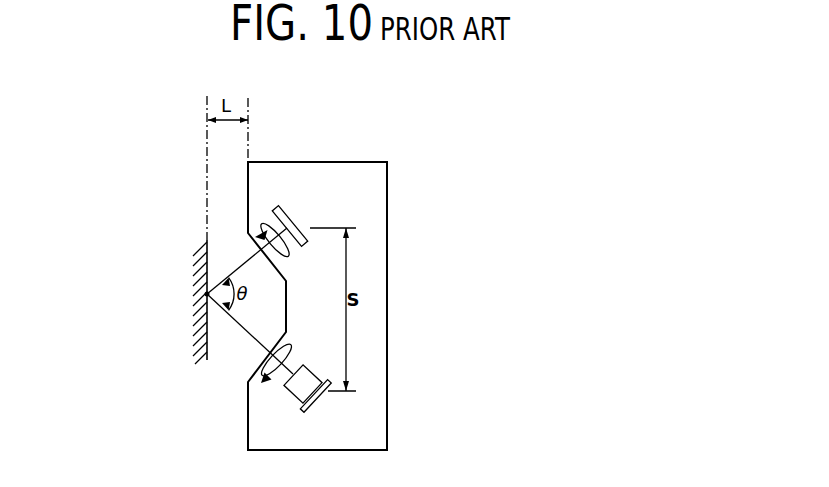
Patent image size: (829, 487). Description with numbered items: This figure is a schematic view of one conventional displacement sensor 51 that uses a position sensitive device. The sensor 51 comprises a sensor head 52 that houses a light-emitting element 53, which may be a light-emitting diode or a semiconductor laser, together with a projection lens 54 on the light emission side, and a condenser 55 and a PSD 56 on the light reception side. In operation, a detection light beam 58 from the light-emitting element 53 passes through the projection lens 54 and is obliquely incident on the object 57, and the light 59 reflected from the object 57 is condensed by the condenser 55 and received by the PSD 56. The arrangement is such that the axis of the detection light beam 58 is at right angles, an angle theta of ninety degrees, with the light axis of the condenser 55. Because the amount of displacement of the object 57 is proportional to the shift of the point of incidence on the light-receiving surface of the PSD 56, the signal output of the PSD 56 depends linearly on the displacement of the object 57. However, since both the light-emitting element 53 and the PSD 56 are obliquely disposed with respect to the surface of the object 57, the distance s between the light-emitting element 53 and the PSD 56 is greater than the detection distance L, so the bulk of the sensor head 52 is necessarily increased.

The displacement sensor 51 is at (395, 199).
The sensor head 52 is at (343, 170).
The light-emitting element 53 is at (287, 398).
The projection lens 54 is at (260, 382).
The condenser 55 is at (256, 236).
The PSD 56 is at (280, 208).
The object 57 is at (198, 347).
The detection light beam 58 is at (255, 338).
The reflected light 59 is at (250, 265).